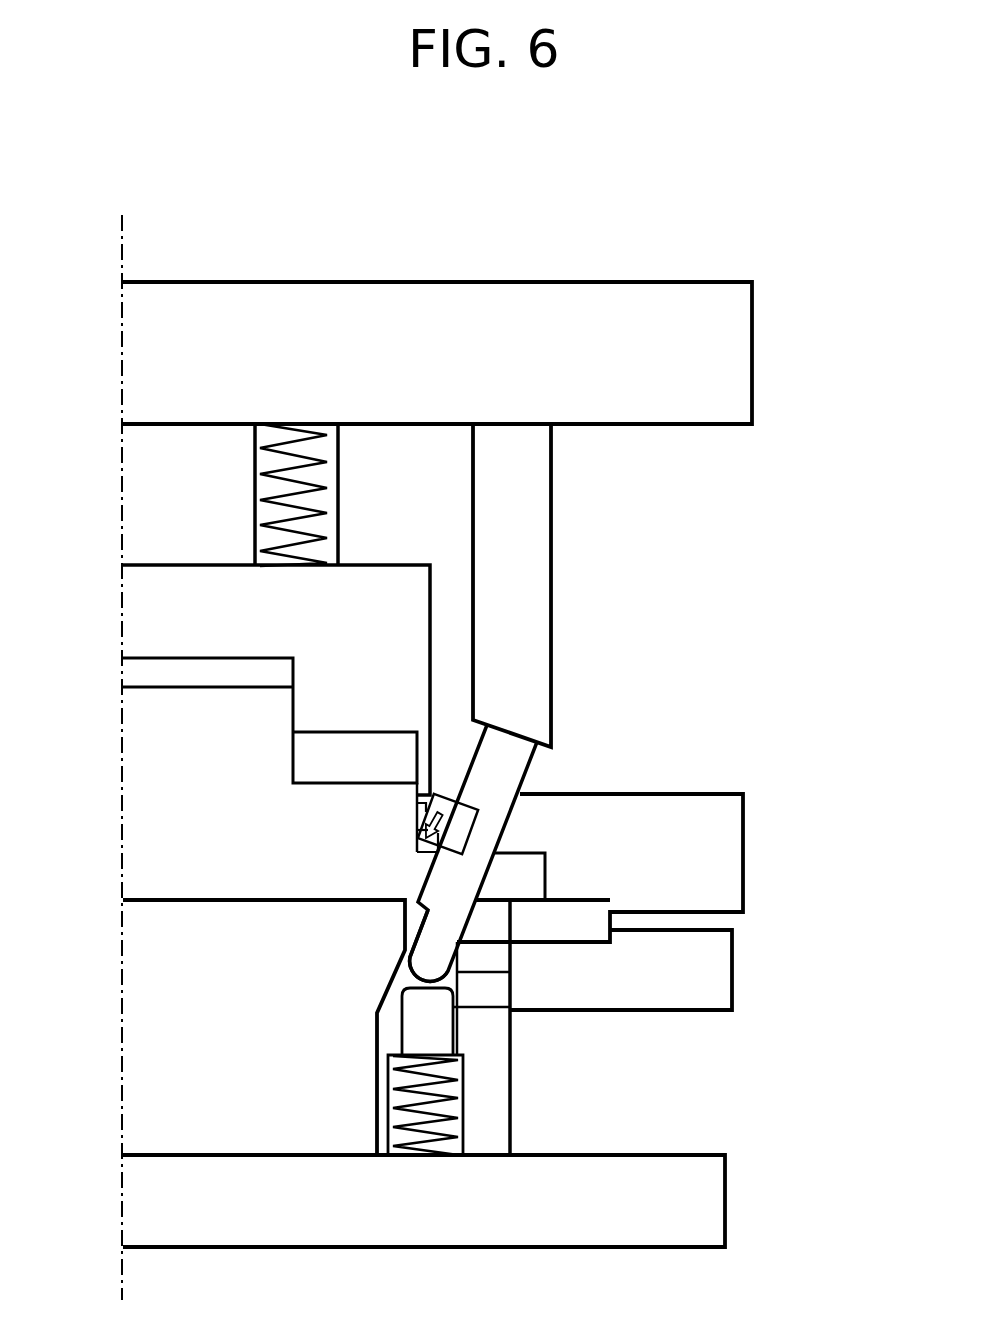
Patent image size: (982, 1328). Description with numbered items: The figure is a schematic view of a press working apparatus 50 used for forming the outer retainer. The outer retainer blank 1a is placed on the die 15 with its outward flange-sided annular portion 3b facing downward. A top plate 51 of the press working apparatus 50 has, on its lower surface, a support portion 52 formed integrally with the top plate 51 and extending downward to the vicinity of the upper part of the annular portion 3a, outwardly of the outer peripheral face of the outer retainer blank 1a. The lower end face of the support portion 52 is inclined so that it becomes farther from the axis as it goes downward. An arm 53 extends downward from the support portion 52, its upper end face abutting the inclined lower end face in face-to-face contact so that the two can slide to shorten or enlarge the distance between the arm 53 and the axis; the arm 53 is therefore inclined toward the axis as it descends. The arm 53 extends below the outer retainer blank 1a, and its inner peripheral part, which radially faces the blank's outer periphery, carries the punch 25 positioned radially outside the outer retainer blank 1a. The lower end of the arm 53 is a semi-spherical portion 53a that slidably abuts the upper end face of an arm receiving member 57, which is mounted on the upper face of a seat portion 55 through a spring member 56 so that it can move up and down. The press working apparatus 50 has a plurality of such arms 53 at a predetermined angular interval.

The press working apparatus 50 is at (824, 243).
The top plate 51 is at (733, 365).
The support portion 52 is at (530, 541).
The arm 53 is at (507, 771).
The semi-spherical portion 53a is at (428, 972).
The punch 25 is at (463, 828).
The annular portion 3a is at (417, 807).
The outer retainer blank 1a is at (390, 830).
The outward flange-sided annular portion 3b is at (417, 849).
The die 15 is at (418, 878).
The seat portion 55 is at (702, 1198).
The spring member 56 is at (463, 1105).
The arm receiving member 57 is at (435, 1028).